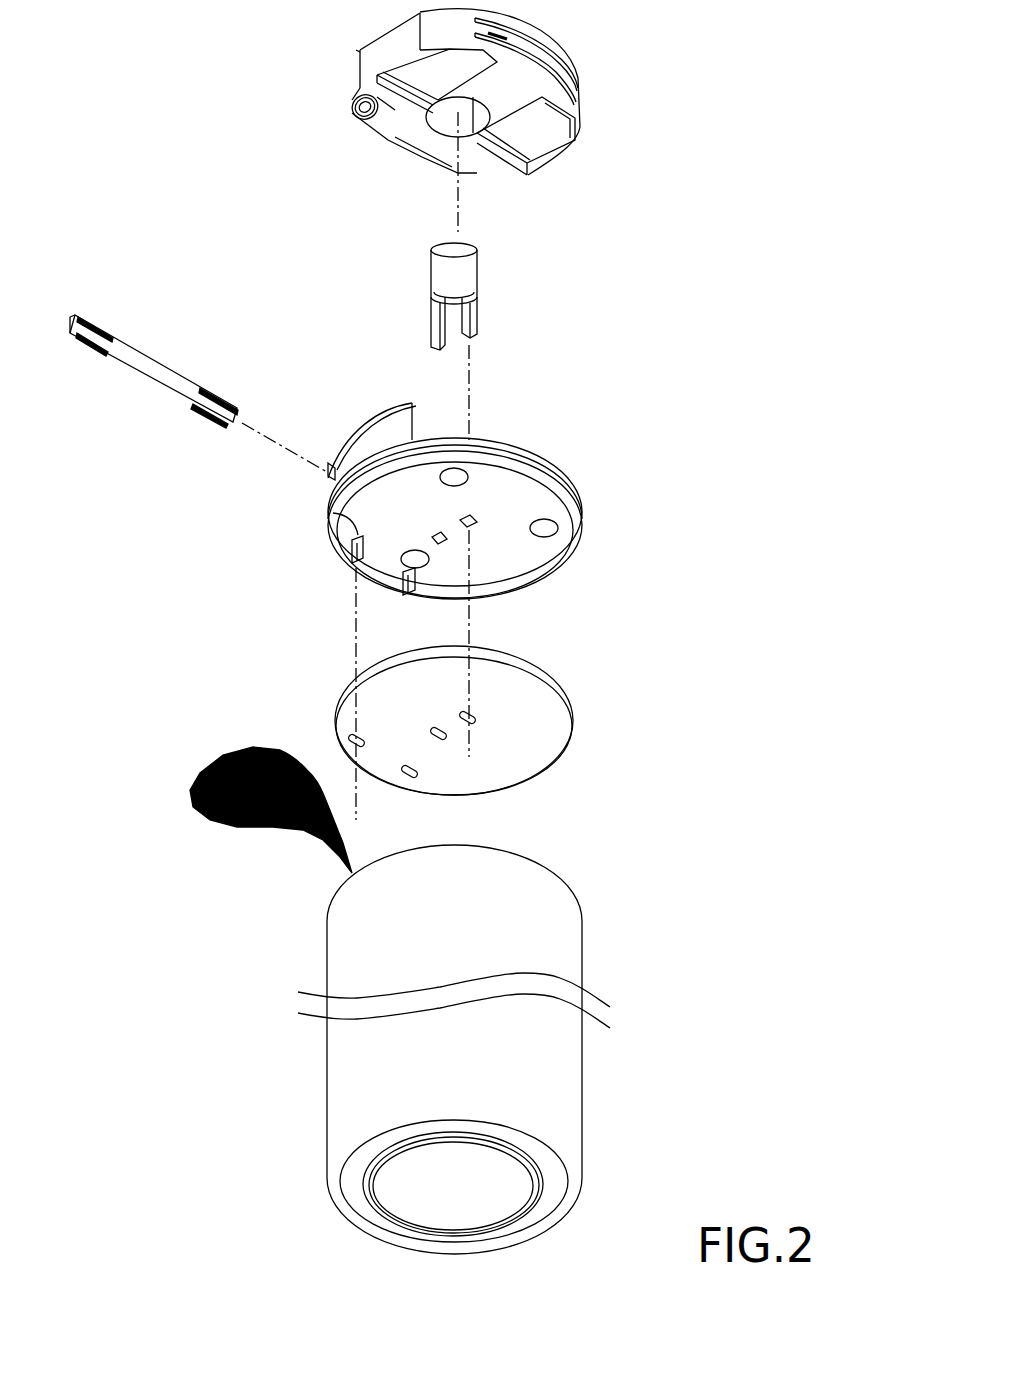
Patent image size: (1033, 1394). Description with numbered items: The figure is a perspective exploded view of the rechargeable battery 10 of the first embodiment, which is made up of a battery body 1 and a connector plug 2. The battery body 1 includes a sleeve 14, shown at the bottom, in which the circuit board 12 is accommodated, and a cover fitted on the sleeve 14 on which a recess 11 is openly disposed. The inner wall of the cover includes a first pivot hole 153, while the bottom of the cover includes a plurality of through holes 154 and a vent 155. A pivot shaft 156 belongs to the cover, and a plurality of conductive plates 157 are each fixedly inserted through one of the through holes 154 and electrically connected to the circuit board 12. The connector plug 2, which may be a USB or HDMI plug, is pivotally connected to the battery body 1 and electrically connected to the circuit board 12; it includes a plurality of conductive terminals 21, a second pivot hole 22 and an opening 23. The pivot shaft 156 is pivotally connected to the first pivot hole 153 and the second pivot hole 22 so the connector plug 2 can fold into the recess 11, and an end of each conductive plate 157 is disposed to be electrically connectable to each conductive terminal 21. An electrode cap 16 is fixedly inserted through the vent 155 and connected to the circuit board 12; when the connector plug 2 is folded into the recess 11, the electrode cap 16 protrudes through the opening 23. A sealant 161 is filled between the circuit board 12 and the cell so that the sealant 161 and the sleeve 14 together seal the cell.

The rechargeable battery 10 is at (184, 57).
The battery body 1 is at (496, 1049).
The sleeve 14 is at (552, 1081).
The connector plug 2 is at (497, 114).
The conductive terminals 21 is at (592, 112).
The second pivot hole 22 is at (362, 109).
The opening 23 is at (447, 130).
The electrode cap 16 is at (467, 272).
The recess 11 is at (436, 487).
The first pivot hole 153 is at (330, 467).
The through holes 154 is at (333, 513).
The vent 155 is at (468, 525).
The pivot shaft 156 is at (145, 368).
The conductive plates 157 is at (345, 550).
The circuit board 12 is at (547, 740).
The sealant 161 is at (241, 762).